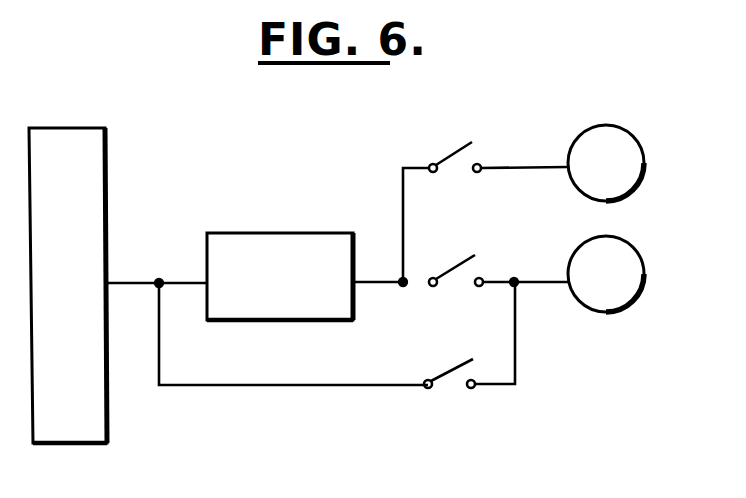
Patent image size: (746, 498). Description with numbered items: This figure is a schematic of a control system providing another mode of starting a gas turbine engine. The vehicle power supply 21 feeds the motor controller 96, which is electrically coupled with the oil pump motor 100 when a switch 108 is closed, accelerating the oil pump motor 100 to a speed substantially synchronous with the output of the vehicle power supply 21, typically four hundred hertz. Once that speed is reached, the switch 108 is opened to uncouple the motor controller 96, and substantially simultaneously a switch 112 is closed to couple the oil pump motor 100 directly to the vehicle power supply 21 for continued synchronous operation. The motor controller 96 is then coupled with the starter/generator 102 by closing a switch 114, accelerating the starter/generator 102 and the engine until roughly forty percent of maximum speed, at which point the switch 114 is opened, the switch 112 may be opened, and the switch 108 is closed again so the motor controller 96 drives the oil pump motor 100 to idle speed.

The vehicle power supply 21 is at (80, 291).
The motor controller 96 is at (292, 289).
The oil pump motor 100 is at (637, 255).
The starter/generator 102 is at (637, 142).
The switch 108 is at (454, 263).
The switch 112 is at (450, 366).
The switch 114 is at (452, 151).